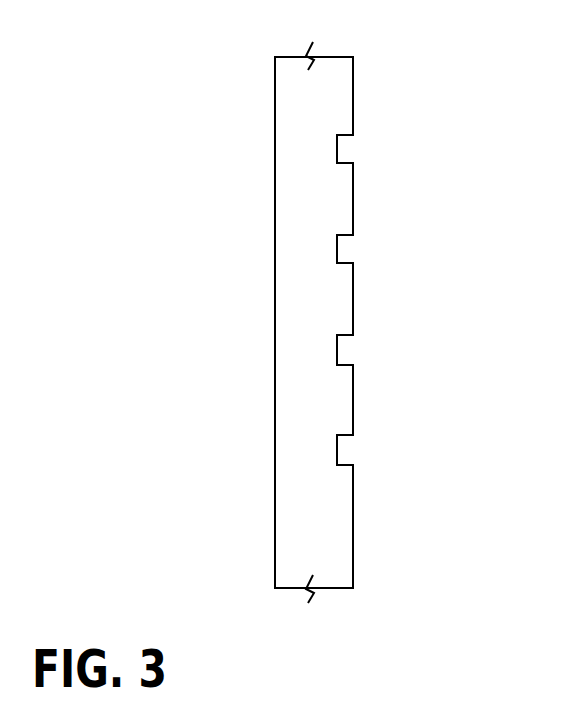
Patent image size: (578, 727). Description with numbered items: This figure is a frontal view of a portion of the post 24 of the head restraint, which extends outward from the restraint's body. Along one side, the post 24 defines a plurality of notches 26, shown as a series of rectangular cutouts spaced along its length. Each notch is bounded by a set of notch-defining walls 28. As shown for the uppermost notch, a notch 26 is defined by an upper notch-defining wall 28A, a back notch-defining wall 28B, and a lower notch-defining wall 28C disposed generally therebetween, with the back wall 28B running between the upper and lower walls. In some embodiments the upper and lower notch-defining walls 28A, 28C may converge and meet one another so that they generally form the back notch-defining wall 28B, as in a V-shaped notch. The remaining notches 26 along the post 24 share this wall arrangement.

The post 24 is at (293, 95).
The notches 26 is at (335, 149).
The notch-defining walls 28 is at (329, 131).
The upper notch-defining wall 28A is at (340, 139).
The back notch-defining wall 28B is at (342, 147).
The lower notch-defining wall 28C is at (340, 162).